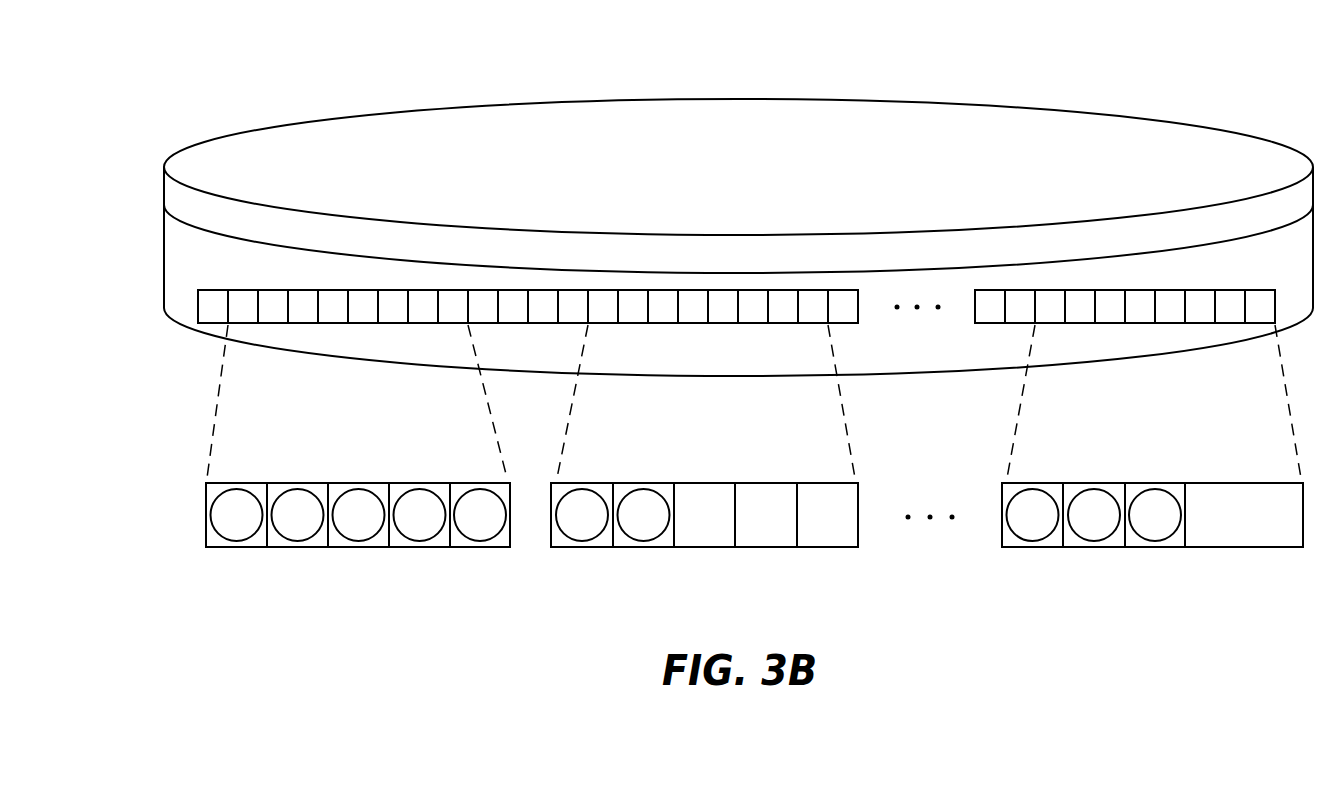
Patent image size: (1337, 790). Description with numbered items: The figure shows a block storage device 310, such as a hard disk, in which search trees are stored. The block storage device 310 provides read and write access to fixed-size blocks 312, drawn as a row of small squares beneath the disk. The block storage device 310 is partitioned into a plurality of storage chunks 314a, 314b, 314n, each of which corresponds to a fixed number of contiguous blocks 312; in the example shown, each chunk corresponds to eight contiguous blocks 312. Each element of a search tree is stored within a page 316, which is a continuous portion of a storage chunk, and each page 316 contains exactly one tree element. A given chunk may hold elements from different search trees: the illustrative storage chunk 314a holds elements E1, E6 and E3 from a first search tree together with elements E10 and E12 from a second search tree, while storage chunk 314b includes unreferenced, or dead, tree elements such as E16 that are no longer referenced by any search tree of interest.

The block storage device 310 is at (758, 177).
The fixed-size blocks 312 is at (197, 310).
The storage chunk 314a is at (349, 515).
The storage chunk 314b is at (672, 434).
The storage chunk 314n is at (1128, 434).
The page 316 is at (220, 548).